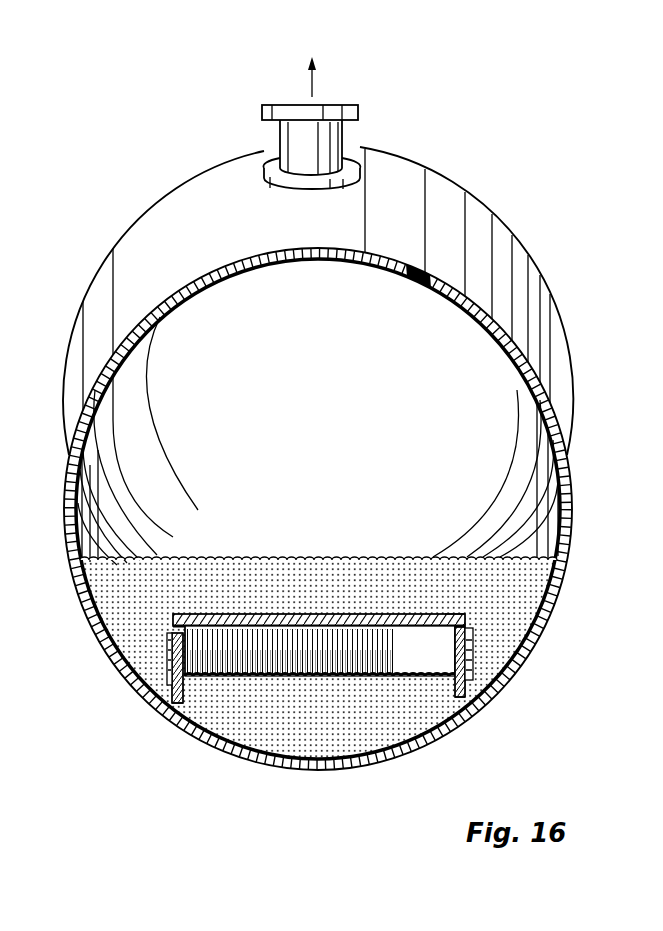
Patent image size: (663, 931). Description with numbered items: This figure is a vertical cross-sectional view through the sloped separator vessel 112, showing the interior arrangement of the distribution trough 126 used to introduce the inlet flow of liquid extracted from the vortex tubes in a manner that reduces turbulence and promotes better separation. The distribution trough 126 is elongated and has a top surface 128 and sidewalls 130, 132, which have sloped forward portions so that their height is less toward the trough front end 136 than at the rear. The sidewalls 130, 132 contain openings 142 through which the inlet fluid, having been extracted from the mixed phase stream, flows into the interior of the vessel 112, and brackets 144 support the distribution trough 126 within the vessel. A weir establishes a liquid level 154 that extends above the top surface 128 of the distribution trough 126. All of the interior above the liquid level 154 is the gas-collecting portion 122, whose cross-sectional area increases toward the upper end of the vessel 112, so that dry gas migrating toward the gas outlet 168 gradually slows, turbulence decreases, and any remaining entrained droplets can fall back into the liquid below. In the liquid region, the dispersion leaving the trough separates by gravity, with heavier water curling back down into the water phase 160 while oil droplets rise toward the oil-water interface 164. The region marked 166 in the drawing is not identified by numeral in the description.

The vessel 112 is at (527, 268).
The gas-collecting portion 122 is at (296, 331).
The distribution trough 126 is at (478, 609).
The top surface 128 is at (337, 614).
The sidewall 130 is at (178, 700).
The sidewall 132 is at (487, 702).
The trough front end 136 is at (297, 679).
The openings 142 is at (176, 670).
The brackets 144 is at (170, 668).
The liquid level 154 is at (252, 558).
The water phase 160 is at (374, 729).
The oil-water interface 164 is at (232, 678).
The upper liquid volume 166 is at (161, 611).
The gas outlet 168 is at (358, 108).